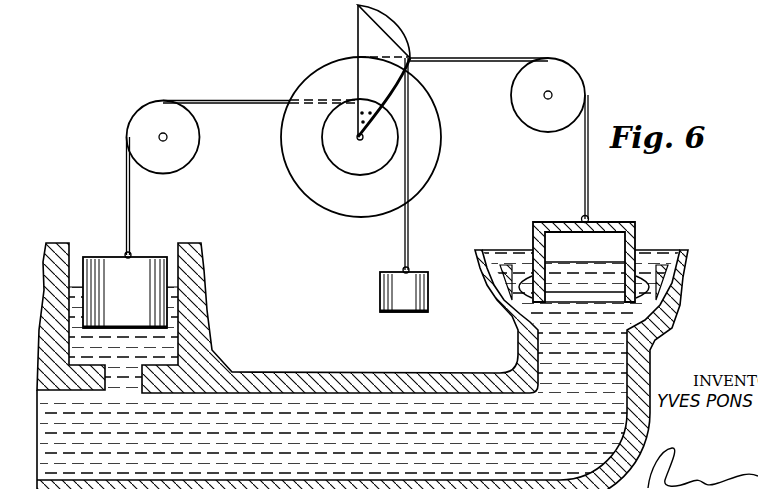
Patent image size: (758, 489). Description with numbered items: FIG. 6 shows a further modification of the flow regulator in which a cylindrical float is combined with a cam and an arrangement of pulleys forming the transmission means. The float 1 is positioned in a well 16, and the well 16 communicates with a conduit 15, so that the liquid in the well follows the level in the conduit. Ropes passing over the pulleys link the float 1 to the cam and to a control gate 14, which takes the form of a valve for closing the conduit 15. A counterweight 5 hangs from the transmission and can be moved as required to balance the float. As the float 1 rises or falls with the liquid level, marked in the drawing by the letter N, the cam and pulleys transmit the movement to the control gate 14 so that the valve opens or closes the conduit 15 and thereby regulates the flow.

The float 1 is at (138, 270).
The counterweight 5 is at (403, 312).
The control gate 14 is at (618, 226).
The conduit 15 is at (433, 408).
The well 16 is at (173, 341).
The liquid level N is at (172, 280).